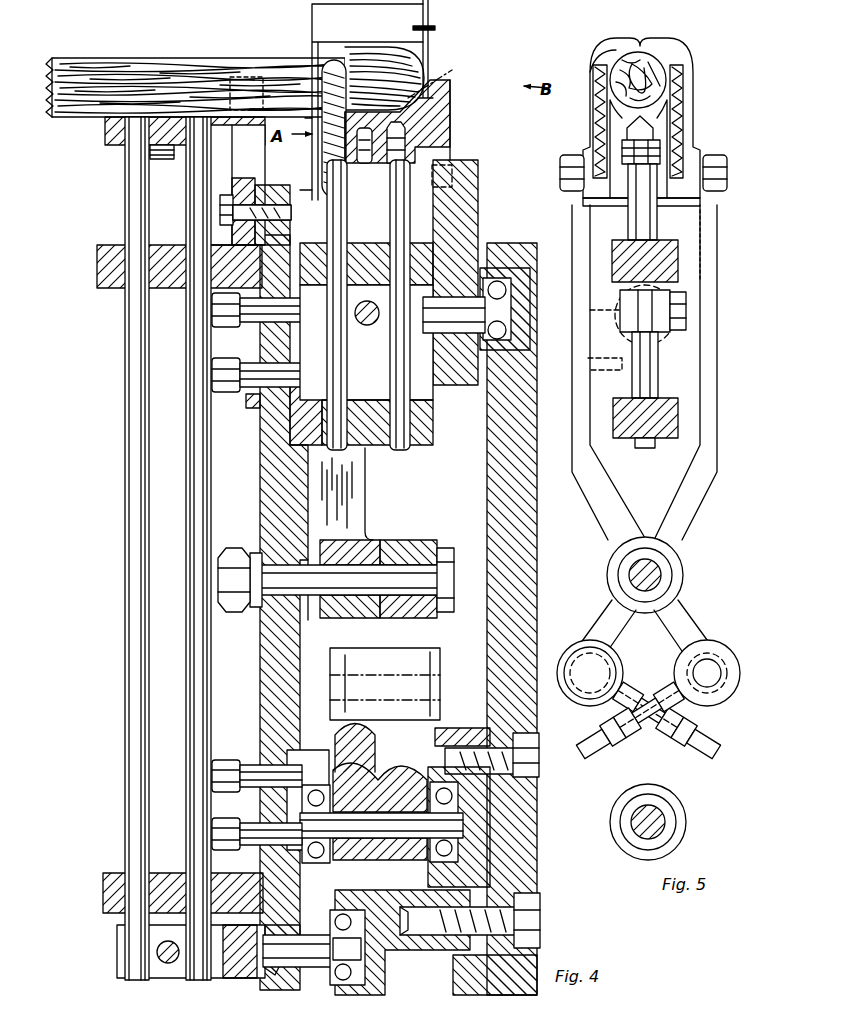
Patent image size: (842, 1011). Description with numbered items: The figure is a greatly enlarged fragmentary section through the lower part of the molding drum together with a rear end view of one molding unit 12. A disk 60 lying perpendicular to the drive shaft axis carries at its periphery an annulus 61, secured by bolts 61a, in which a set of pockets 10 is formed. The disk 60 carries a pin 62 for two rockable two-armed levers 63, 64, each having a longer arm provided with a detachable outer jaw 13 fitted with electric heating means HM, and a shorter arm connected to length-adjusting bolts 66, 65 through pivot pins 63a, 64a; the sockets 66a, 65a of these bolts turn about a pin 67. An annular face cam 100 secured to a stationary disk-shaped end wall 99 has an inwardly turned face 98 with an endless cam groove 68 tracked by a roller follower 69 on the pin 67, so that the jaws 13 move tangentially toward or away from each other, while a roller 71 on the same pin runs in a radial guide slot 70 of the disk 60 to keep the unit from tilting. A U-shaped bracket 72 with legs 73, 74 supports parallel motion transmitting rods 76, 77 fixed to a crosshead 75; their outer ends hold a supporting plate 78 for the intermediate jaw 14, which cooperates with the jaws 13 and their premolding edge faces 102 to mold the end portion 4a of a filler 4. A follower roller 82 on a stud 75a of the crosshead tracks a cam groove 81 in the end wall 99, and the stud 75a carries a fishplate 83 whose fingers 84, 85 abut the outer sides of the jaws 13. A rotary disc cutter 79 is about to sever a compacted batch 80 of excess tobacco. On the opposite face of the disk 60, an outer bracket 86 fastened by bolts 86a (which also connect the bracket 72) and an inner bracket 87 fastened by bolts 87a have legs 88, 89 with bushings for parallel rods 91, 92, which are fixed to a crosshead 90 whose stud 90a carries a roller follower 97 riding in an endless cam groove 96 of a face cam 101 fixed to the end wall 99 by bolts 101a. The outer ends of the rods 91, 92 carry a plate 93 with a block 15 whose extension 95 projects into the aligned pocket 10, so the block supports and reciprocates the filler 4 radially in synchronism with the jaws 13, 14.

In FIG. 4, the filler 4 is at (223, 72).
In FIG. 5, the filler 4 is at (664, 78).
In FIG. 4, the end portion of the filler 4a is at (421, 70).
In FIG. 5, the end portion of the filler 4a is at (596, 60).
In FIG. 4, the electric heating means HM is at (334, 92).
In FIG. 5, the electric heating means HM is at (594, 102).
In FIG. 4, the pockets 10 is at (233, 160).
In FIG. 4, the molding unit 12 is at (452, 96).
In FIG. 4, the outer jaw 13 is at (316, 56).
In FIG. 5, the outer jaw 13 is at (670, 50).
In FIG. 4, the intermediate jaw 14 is at (452, 118).
In FIG. 5, the intermediate jaw 14 is at (654, 122).
In FIG. 4, the block 15 is at (106, 124).
In FIG. 4, the disk 60 is at (300, 462).
In FIG. 4, the annulus 61 is at (262, 185).
In FIG. 4, the bolts 61a is at (296, 205).
In FIG. 4, the pin 62 is at (356, 562).
In FIG. 5, the pin 62 is at (665, 578).
In FIG. 4, the lever 63 is at (368, 518).
In FIG. 5, the lever 63 is at (576, 492).
In FIG. 5, the pivot pin 63a is at (706, 672).
In FIG. 4, the lever 64 is at (443, 655).
In FIG. 5, the lever 64 is at (720, 482).
In FIG. 5, the pivot pin 64a is at (584, 668).
In FIG. 4, the length-adjusting bolt 65 is at (373, 730).
In FIG. 5, the length-adjusting bolt 65 is at (602, 742).
In FIG. 5, the socket 65a is at (614, 796).
In FIG. 5, the length-adjusting bolt 66 is at (696, 736).
In FIG. 5, the socket 66a is at (680, 790).
In FIG. 4, the pin 67 is at (366, 840).
In FIG. 5, the pin 67 is at (668, 826).
In FIG. 4, the cam groove 68 is at (470, 800).
In FIG. 4, the roller follower 69 is at (436, 856).
In FIG. 4, the guide slot 70 is at (326, 756).
In FIG. 4, the roller 71 is at (322, 852).
In FIG. 4, the bracket 72 is at (300, 420).
In FIG. 4, the leg 73 is at (372, 245).
In FIG. 5, the leg 73 is at (668, 260).
In FIG. 4, the leg 74 is at (372, 446).
In FIG. 5, the leg 74 is at (668, 442).
In FIG. 4, the crosshead 75 is at (383, 330).
In FIG. 5, the crosshead 75 is at (672, 328).
In FIG. 4, the stud 75a is at (500, 312).
In FIG. 4, the motion transmitting rod 76 is at (345, 378).
In FIG. 5, the motion transmitting rod 76 is at (652, 378).
In FIG. 4, the motion transmitting rod 77 is at (403, 388).
In FIG. 4, the supporting plate 78 is at (416, 160).
In FIG. 5, the supporting plate 78 is at (658, 160).
In FIG. 4, the rotary disc cutter 79 is at (428, 22).
In FIG. 4, the batch of excess tobacco 80 is at (445, 77).
In FIG. 4, the cam groove 81 is at (526, 284).
In FIG. 4, the follower roller 82 is at (520, 342).
In FIG. 4, the fishplate 83 is at (458, 226).
In FIG. 5, the fishplate 83 is at (708, 278).
In FIG. 4, the finger 84 is at (454, 186).
In FIG. 5, the finger 84 is at (572, 155).
In FIG. 5, the finger 85 is at (715, 155).
In FIG. 4, the outer bracket 86 is at (250, 410).
In FIG. 4, the bolts 86a is at (214, 375).
In FIG. 4, the inner bracket 87 is at (258, 752).
In FIG. 4, the bolts 87a is at (212, 834).
In FIG. 4, the leg 88 is at (170, 247).
In FIG. 4, the leg 89 is at (172, 874).
In FIG. 4, the crosshead 90 is at (182, 972).
In FIG. 4, the stud 90a is at (270, 968).
In FIG. 4, the rod 91 is at (140, 572).
In FIG. 4, the rod 92 is at (192, 608).
In FIG. 4, the plate 93 is at (108, 140).
In FIG. 4, the extension 95 is at (262, 130).
In FIG. 4, the cam groove 96 is at (386, 976).
In FIG. 4, the roller follower 97 is at (328, 984).
In FIG. 4, the inwardly turned face 98 is at (437, 740).
In FIG. 4, the end wall 99 is at (500, 660).
In FIG. 4, the annular face cam 100 is at (467, 730).
In FIG. 4, the face cam 101 is at (414, 937).
In FIG. 4, the bolts 101a is at (542, 916).
In FIG. 4, the premolding edge faces 102 is at (436, 30).